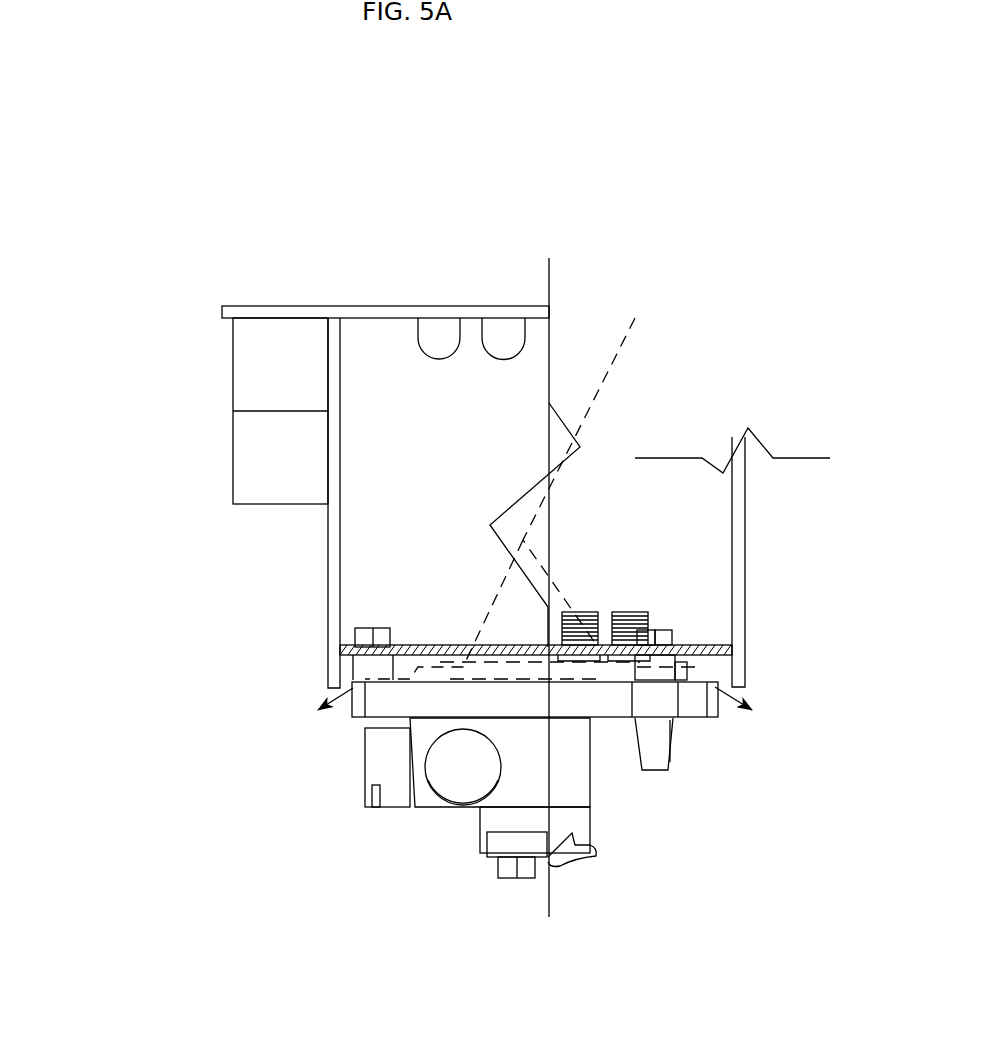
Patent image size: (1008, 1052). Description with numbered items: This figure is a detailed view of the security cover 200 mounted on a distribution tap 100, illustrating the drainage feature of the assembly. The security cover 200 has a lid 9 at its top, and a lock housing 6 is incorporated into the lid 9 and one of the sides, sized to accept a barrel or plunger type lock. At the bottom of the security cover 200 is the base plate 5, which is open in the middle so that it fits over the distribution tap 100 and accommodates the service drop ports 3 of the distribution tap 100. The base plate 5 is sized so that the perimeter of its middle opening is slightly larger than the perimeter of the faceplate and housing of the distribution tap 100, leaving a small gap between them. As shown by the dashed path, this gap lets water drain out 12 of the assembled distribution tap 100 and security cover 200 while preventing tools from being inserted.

The security cover 200 is at (390, 267).
The lid 9 is at (228, 306).
The lock housing 6 is at (233, 380).
The water drain out 12 is at (635, 318).
The service drop ports 3 is at (587, 597).
The base plate 5 is at (352, 647).
The distribution tap 100 is at (595, 735).